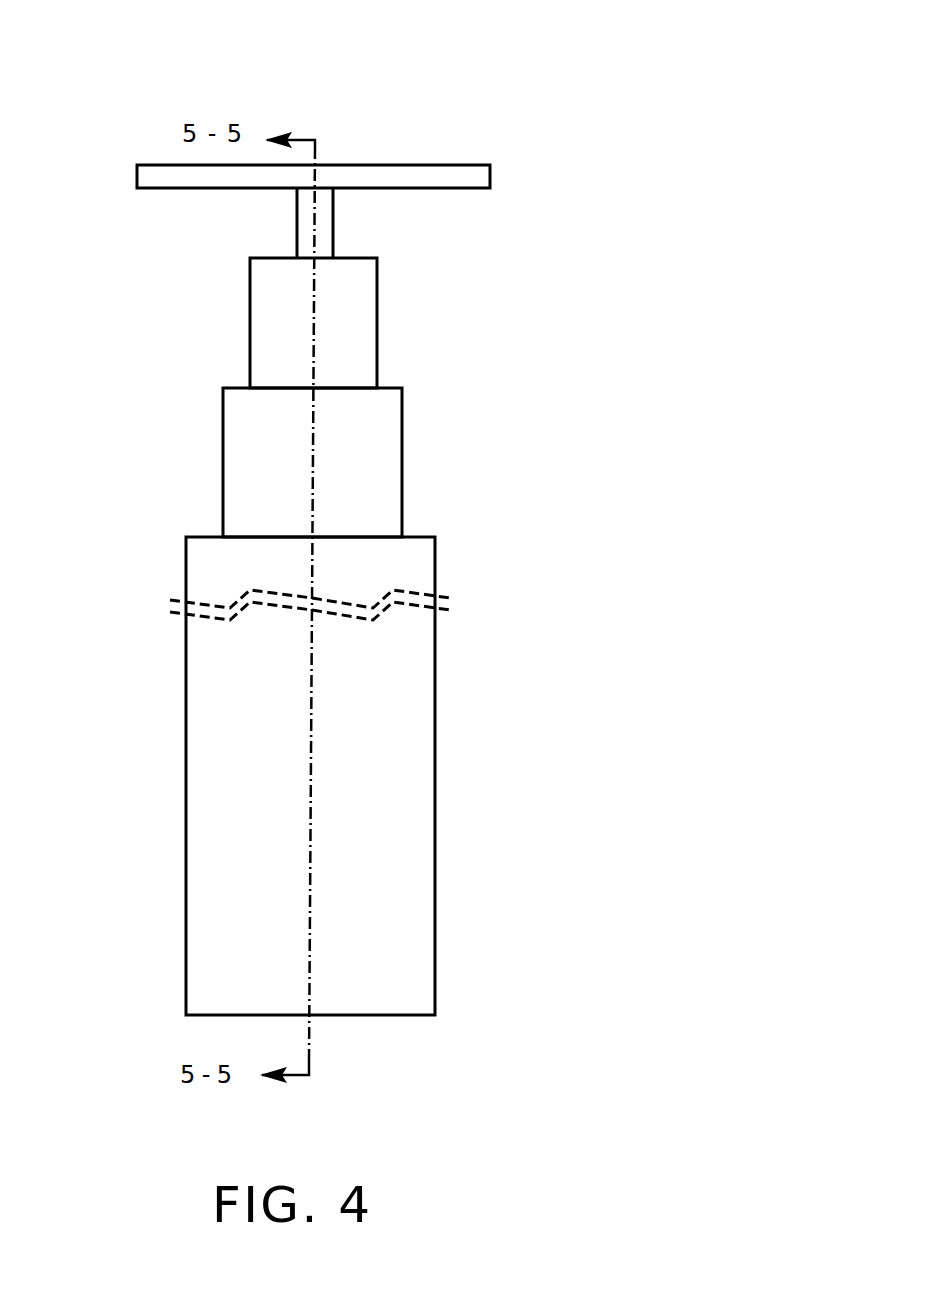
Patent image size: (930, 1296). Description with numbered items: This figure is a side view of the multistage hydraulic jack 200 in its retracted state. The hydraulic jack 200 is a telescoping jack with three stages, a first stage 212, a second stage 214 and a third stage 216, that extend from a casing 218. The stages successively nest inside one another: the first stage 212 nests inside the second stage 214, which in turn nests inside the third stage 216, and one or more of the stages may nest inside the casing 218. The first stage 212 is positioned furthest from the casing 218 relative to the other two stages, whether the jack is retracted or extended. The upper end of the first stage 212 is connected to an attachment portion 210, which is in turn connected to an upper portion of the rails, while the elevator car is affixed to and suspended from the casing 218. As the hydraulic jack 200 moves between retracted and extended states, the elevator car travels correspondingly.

The multistage hydraulic jack 200 is at (211, 67).
The attachment portion 210 is at (434, 175).
The first stage 212 is at (355, 220).
The second stage 214 is at (417, 315).
The third stage 216 is at (430, 445).
The casing 218 is at (392, 713).